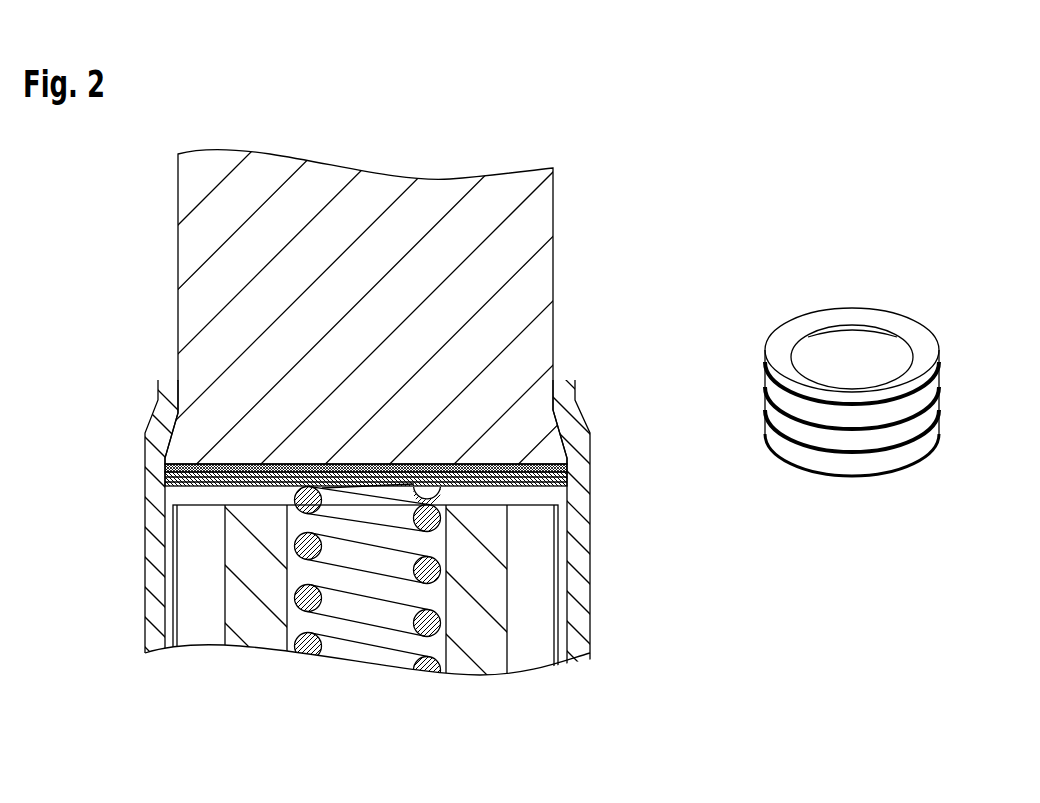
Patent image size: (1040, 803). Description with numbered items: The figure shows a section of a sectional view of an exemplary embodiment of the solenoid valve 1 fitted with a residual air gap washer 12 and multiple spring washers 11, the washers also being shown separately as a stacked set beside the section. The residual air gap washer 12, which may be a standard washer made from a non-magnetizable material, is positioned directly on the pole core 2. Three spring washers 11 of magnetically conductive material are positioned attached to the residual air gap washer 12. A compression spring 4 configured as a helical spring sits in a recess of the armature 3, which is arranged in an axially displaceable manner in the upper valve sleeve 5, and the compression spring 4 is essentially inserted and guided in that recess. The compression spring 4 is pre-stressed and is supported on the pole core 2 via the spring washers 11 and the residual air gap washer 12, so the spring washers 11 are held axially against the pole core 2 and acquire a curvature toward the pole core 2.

The solenoid valve 1 is at (529, 144).
The pole core 2 is at (527, 223).
The armature 3 is at (475, 636).
The compression spring 4 is at (430, 569).
The upper valve sleeve 5 is at (563, 333).
The spring washers 11 is at (568, 472).
The residual air gap washer 12 is at (569, 456).